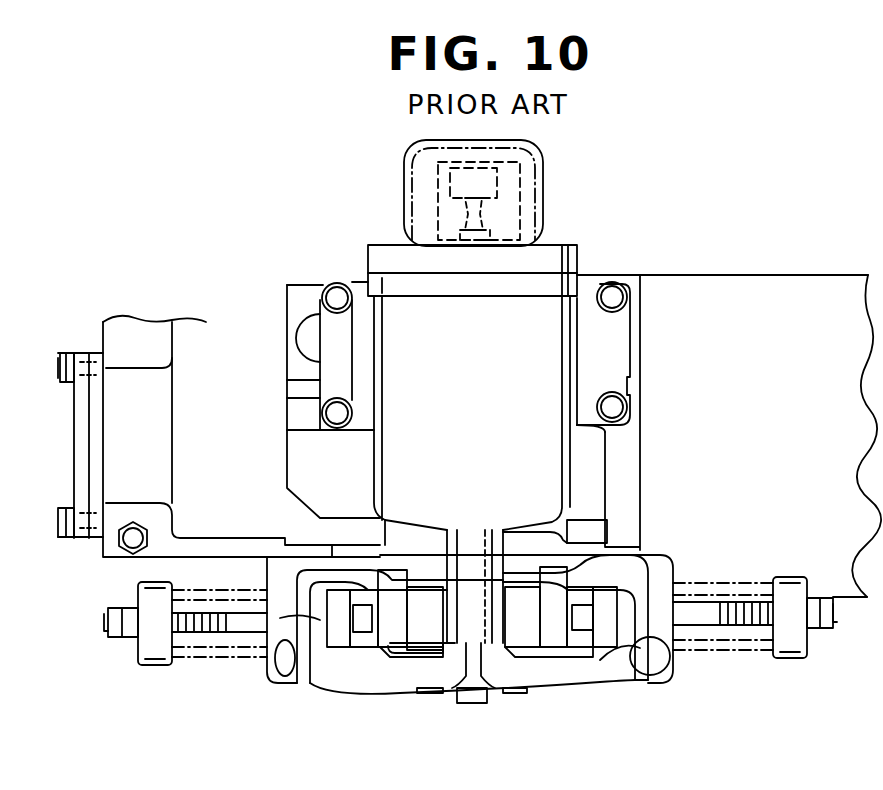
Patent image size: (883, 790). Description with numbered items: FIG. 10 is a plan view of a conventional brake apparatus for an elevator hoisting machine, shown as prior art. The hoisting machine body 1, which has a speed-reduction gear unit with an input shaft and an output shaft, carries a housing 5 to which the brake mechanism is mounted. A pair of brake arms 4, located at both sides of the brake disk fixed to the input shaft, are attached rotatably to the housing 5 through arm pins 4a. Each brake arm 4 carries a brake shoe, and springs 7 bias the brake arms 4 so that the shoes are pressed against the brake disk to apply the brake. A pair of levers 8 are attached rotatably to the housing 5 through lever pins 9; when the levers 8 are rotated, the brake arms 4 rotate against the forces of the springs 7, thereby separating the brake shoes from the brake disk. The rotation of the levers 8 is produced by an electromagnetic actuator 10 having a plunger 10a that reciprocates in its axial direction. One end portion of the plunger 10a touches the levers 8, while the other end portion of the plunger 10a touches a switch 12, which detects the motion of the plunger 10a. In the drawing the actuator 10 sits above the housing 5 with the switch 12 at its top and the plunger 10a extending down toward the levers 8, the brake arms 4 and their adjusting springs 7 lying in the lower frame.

The hoisting machine body 1 is at (142, 338).
The brake arm 4 is at (345, 618).
The arm pin 4a is at (512, 692).
The housing 5 is at (622, 664).
The spring 7 is at (190, 660).
The lever 8 is at (635, 680).
The lever pin 9 is at (286, 668).
The electromagnetic actuator 10 is at (410, 327).
The plunger 10a is at (525, 214).
The switch 12 is at (520, 176).